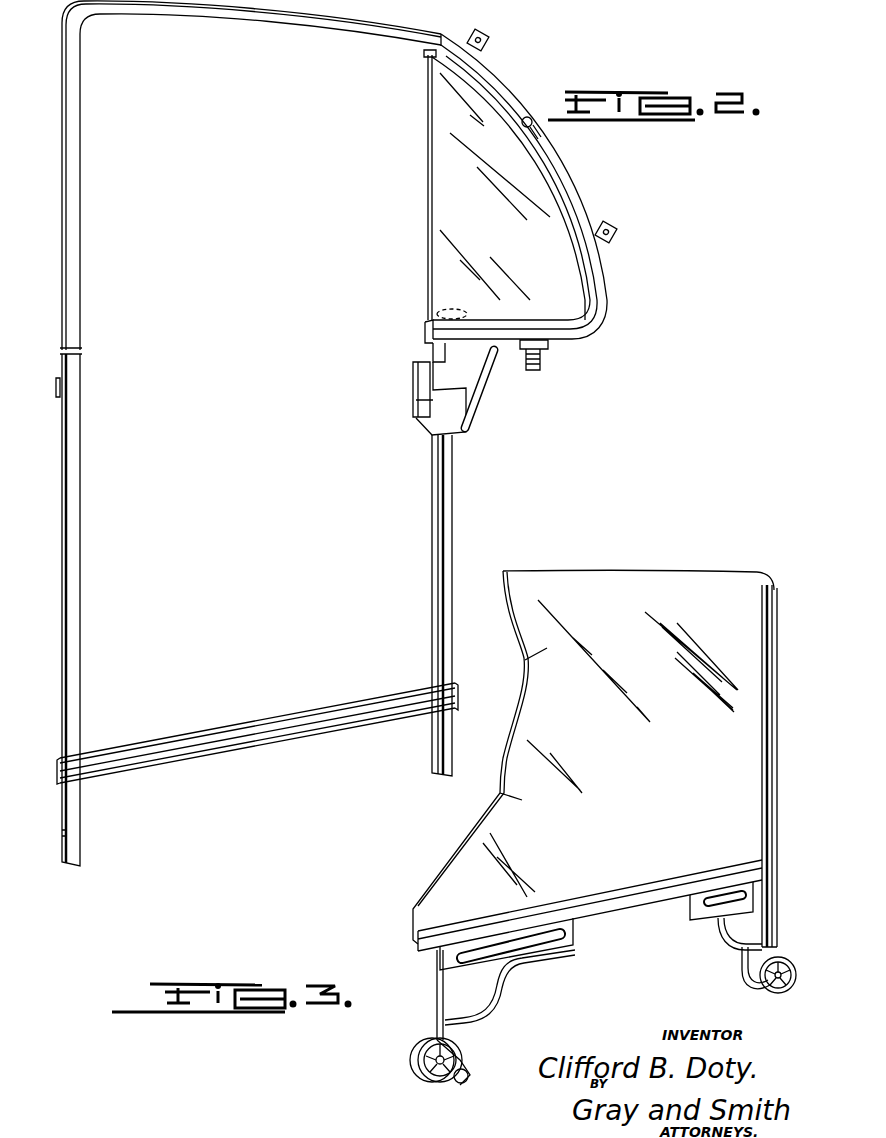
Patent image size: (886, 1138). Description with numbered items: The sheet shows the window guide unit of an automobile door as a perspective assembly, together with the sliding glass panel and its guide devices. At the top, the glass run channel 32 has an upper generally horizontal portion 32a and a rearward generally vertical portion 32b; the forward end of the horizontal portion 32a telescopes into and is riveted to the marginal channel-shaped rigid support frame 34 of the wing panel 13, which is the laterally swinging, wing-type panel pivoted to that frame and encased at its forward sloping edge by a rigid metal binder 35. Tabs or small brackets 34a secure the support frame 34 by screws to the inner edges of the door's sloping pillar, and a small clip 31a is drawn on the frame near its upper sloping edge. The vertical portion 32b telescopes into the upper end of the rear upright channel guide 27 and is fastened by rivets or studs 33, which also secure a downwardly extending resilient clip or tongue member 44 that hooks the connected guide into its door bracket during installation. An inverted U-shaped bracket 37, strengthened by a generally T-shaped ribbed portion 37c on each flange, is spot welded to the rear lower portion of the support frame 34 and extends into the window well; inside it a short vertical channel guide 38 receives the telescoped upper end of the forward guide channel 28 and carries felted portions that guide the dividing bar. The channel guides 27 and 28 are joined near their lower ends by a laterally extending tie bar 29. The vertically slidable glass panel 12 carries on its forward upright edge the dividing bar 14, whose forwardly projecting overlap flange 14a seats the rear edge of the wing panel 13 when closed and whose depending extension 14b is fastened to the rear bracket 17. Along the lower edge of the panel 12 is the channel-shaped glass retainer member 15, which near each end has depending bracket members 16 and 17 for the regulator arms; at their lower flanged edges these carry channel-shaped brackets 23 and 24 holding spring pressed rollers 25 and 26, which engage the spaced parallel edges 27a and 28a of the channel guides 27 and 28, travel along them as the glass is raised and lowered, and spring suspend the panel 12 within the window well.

In FIG. 3, the vertically slidable glass panel 12 is at (634, 776).
In FIG. 2, the laterally swinging wing panel 13 is at (504, 218).
In FIG. 3, the dividing bar 14 is at (768, 580).
In FIG. 3, the overlap flange 14a is at (779, 758).
In FIG. 3, the depending extension 14b is at (776, 896).
In FIG. 3, the glass retainer member 15 is at (648, 886).
In FIG. 3, the depending bracket member 16 is at (504, 982).
In FIG. 3, the depending bracket member 17 is at (722, 936).
In FIG. 3, the channel shaped bracket 23 is at (480, 1042).
In FIG. 3, the channel shaped bracket 24 is at (746, 970).
In FIG. 3, the spring pressed roller 25 is at (438, 1082).
In FIG. 3, the spring pressed roller 26 is at (766, 990).
In FIG. 3, the upright channel guide 27 is at (62, 682).
In FIG. 3, the channel guide edge 27a is at (82, 640).
In FIG. 3, the forward guide channel 28 is at (453, 556).
In FIG. 3, the channel guide edge 28a is at (442, 598).
In FIG. 3, the tie bar 29 is at (274, 718).
In FIG. 2, the clip 31a is at (531, 118).
In FIG. 2, the glass run channel 32 is at (90, 138).
In FIG. 2, the upper horizontal portion 32a is at (232, 16).
In FIG. 2, the rearward vertical portion 32b is at (83, 256).
In FIG. 2, the rivets or studs 33 is at (62, 356).
In FIG. 2, the rigid support frame 34 is at (506, 74).
In FIG. 2, the tabs or small brackets 34a is at (486, 34).
In FIG. 2, the rigid metal binder 35 is at (528, 328).
In FIG. 2, the inverted U-shaped bracket 37 is at (470, 390).
In FIG. 2, the T-shaped ribbed portion 37c is at (470, 426).
In FIG. 2, the short vertical channel guide 38 is at (414, 378).
In FIG. 2, the resilient clip or tongue member 44 is at (58, 396).